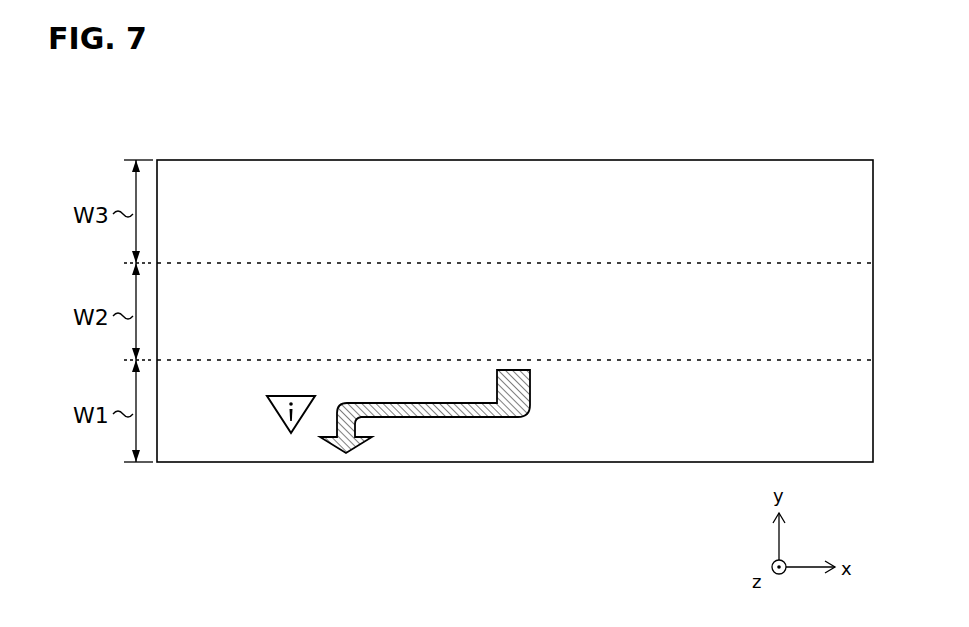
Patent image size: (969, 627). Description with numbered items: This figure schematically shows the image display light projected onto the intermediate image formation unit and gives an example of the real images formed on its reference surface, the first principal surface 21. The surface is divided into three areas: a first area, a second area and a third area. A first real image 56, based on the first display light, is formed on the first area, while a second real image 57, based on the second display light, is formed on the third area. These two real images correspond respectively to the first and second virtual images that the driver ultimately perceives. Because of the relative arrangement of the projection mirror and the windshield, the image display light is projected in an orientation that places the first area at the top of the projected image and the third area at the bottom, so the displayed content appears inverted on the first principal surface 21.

The first principal surface 21 is at (840, 138).
The second real image 57 is at (511, 160).
The first real image 56 is at (407, 462).